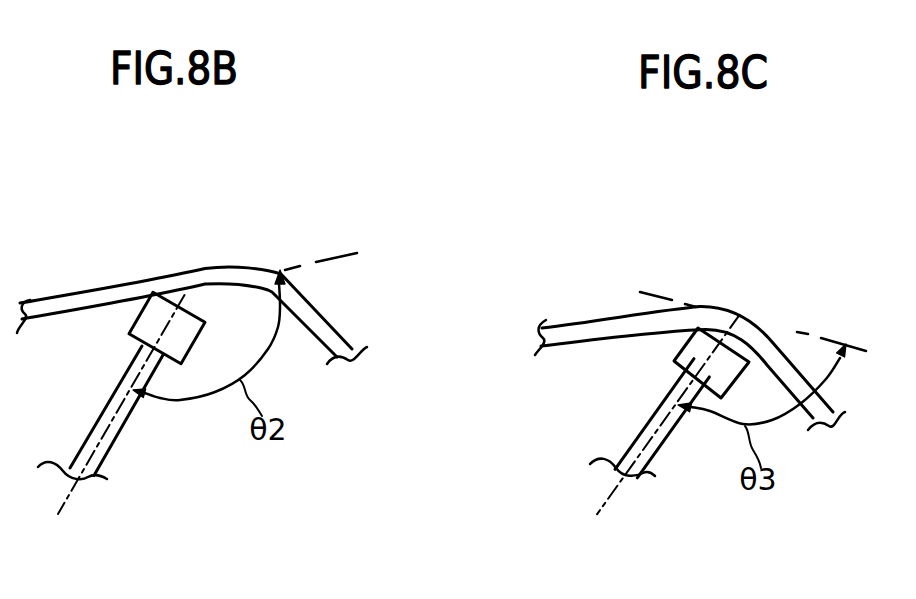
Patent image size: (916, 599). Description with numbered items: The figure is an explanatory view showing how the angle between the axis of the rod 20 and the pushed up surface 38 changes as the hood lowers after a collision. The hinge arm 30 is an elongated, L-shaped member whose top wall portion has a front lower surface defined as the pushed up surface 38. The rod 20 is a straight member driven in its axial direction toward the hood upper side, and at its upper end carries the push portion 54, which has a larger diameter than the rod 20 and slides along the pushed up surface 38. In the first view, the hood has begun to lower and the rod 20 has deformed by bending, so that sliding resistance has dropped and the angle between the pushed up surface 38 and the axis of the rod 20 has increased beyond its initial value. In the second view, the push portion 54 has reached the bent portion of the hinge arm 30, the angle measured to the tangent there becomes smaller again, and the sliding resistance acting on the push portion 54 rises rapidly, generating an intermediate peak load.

In FIG. 8B, the rod 20 is at (106, 406).
In FIG. 8C, the rod 20 is at (639, 432).
In FIG. 8B, the hinge arm 30 is at (75, 293).
In FIG. 8C, the hinge arm 30 is at (592, 325).
In FIG. 8B, the pushed up surface 38 is at (115, 305).
In FIG. 8C, the pushed up surface 38 is at (628, 337).
In FIG. 8B, the push portion 54 is at (130, 334).
In FIG. 8C, the push portion 54 is at (677, 361).